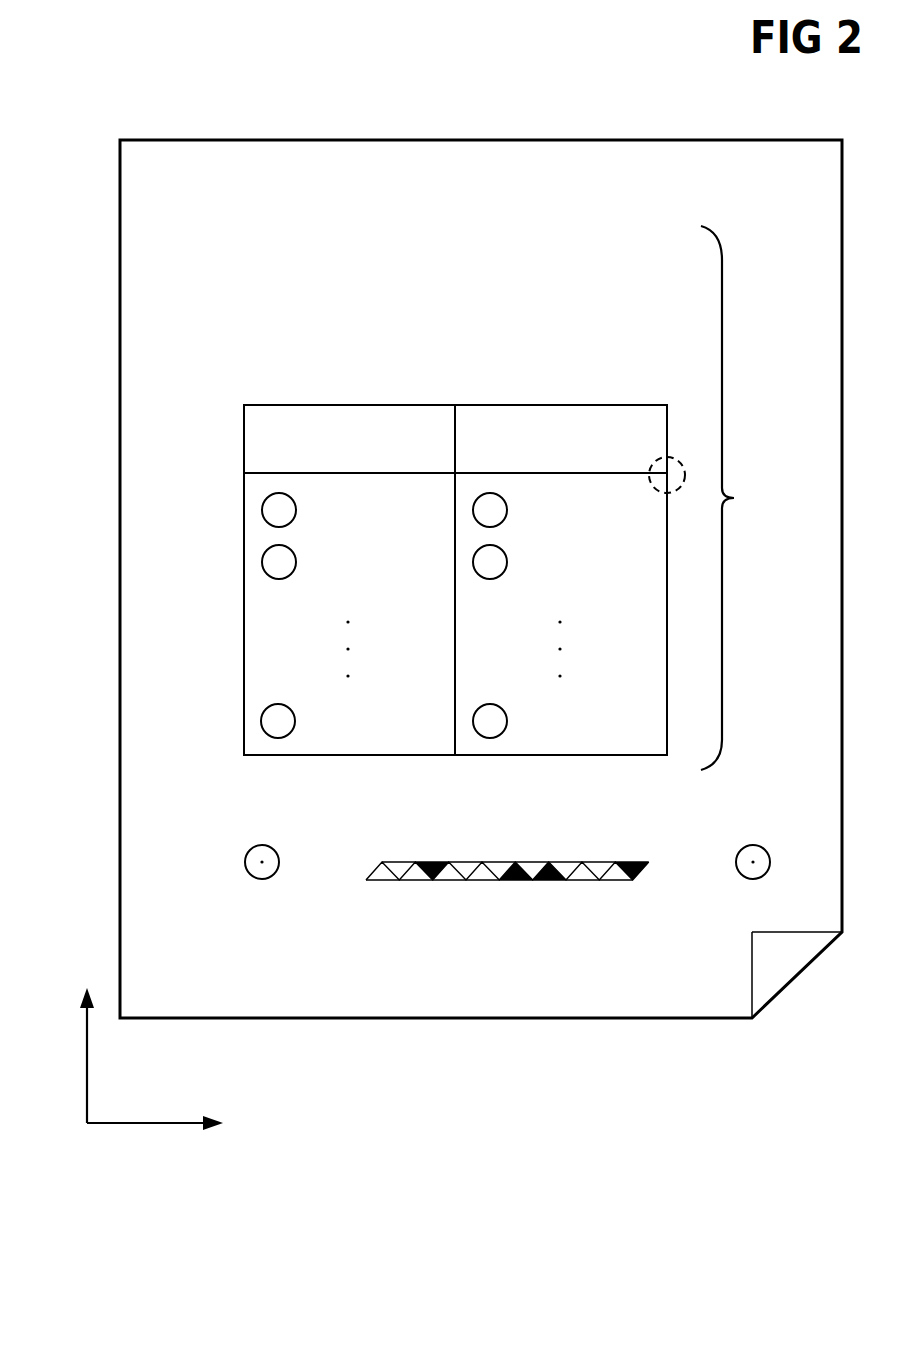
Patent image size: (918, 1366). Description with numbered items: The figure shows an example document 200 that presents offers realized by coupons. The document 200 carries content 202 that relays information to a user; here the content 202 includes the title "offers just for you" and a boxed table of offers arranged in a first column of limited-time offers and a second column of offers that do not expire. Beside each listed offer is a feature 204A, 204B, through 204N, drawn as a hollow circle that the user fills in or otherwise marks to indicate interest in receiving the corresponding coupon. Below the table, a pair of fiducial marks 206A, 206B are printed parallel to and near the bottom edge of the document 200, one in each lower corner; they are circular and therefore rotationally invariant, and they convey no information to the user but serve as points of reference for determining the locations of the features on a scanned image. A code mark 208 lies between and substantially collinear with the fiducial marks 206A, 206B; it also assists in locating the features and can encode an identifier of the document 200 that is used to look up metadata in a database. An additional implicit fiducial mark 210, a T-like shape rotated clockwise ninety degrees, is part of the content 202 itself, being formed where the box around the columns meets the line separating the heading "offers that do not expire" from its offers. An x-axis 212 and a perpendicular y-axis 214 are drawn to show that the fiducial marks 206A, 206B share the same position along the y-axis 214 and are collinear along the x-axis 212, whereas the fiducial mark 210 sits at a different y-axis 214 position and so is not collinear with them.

The document 200 is at (410, 140).
The content 202 is at (514, 498).
The feature 204A is at (262, 510).
The feature 204B is at (262, 562).
The feature 204N is at (488, 704).
The fiducial mark 206A is at (262, 845).
The fiducial mark 206B is at (753, 845).
The code mark 208 is at (480, 862).
The fiducial mark 210 is at (665, 458).
The x-axis 212 is at (95, 1125).
The y-axis 214 is at (87, 1032).